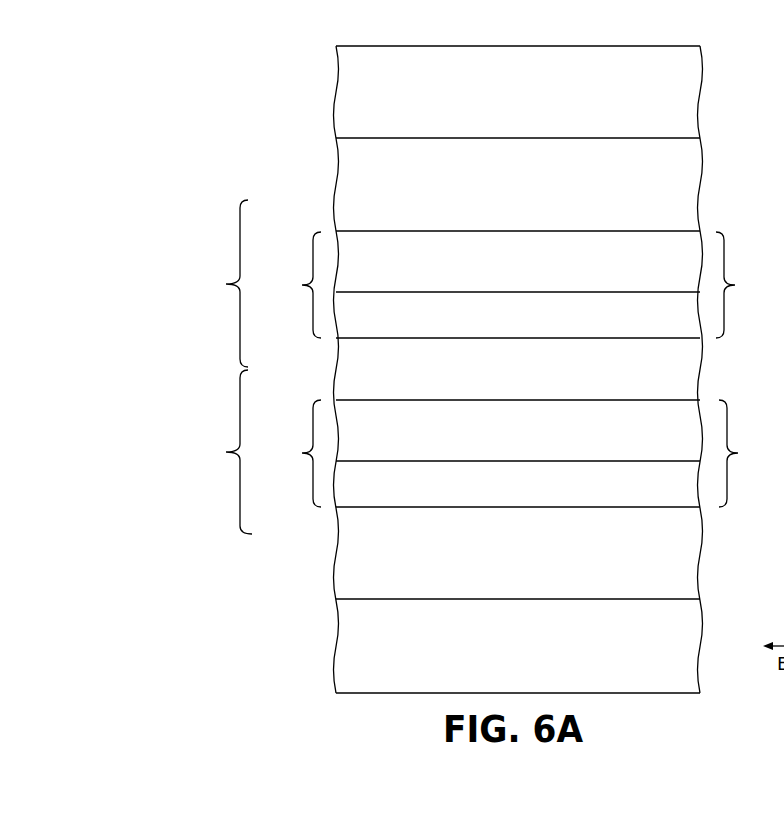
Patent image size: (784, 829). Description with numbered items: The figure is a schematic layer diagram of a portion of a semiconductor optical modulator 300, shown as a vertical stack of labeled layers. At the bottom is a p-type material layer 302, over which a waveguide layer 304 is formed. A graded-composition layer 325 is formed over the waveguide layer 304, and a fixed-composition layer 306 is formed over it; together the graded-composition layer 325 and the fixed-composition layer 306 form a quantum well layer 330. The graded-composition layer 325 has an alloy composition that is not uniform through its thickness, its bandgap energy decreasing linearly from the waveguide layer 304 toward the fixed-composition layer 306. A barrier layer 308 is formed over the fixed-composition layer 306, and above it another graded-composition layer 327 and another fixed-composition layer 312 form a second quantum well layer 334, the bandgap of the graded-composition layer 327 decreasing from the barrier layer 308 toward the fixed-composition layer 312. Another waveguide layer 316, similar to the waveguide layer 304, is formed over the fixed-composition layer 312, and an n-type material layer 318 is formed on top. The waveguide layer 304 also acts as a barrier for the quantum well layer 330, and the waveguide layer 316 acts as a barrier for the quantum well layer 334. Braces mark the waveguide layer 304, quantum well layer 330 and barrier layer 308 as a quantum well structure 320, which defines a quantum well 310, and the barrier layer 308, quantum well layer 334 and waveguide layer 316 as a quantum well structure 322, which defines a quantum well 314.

The semiconductor optical modulator 300 is at (284, 69).
The p-type material layer 302 is at (380, 685).
The waveguide layer 304 is at (380, 591).
The fixed-composition layer 306 is at (380, 446).
The barrier layer 308 is at (380, 385).
The quantum well 310 is at (294, 453).
The fixed-composition layer 312 is at (380, 286).
The quantum well 314 is at (292, 285).
The waveguide layer 316 is at (380, 225).
The n-type material layer 318 is at (380, 120).
The quantum well structure 320 is at (216, 452).
The quantum well structure 322 is at (219, 283).
The graded-composition layer 325 is at (382, 500).
The graded-composition layer 327 is at (382, 330).
The quantum well layer 330 is at (748, 453).
The quantum well layer 334 is at (745, 285).